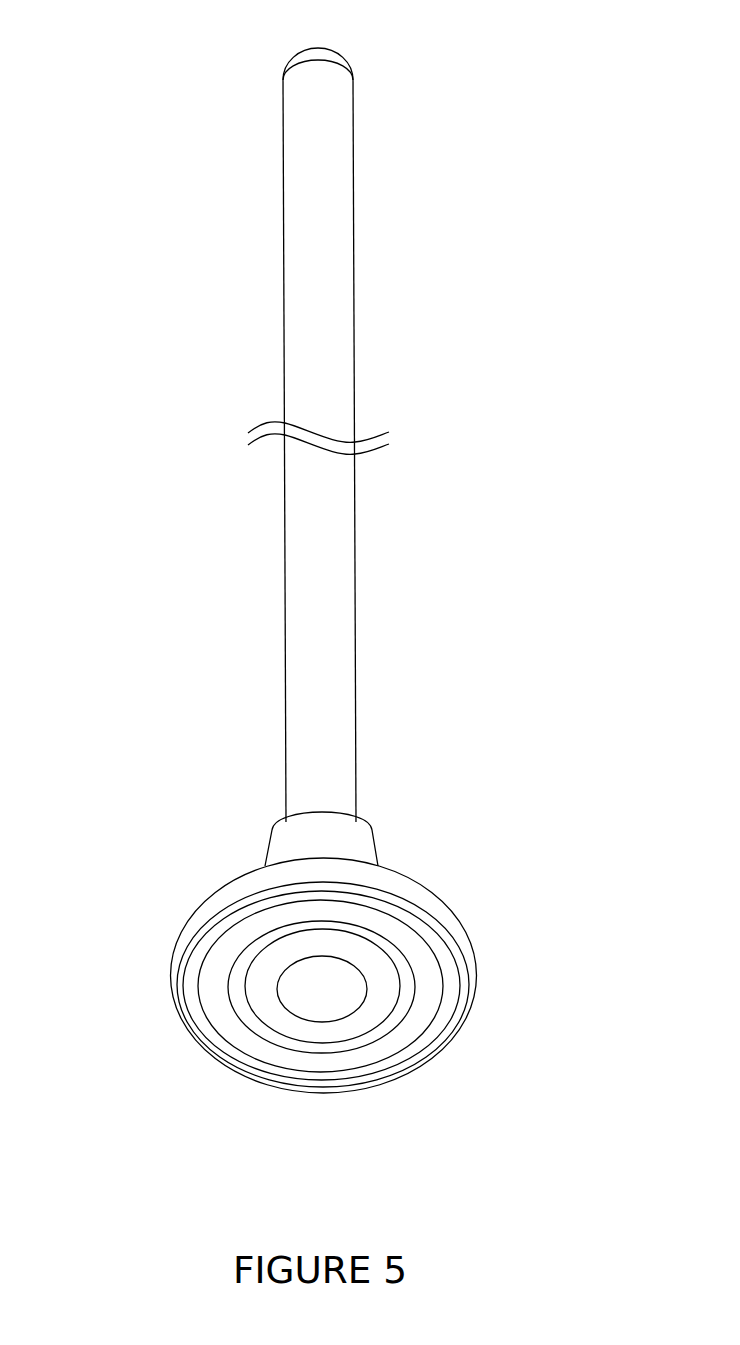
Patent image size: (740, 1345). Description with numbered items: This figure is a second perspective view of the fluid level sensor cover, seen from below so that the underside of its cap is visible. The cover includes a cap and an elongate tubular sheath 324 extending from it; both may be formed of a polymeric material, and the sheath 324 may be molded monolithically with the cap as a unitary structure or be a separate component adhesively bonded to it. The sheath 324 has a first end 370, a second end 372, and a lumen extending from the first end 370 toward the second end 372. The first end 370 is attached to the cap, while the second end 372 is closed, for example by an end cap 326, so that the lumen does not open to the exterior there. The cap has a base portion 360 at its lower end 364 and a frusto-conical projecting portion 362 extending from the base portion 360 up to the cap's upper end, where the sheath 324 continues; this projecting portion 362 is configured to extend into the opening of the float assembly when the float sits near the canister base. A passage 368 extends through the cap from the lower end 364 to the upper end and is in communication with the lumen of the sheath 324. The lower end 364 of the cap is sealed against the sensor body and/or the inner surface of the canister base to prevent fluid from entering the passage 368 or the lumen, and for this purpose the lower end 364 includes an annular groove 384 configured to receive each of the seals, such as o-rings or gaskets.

The second end 372 is at (262, 66).
The end cap 326 is at (332, 52).
The elongate tubular sheath 324 is at (342, 290).
The first end 370 is at (395, 790).
The frusto-conical projecting portion 362 is at (363, 851).
The base portion 360 is at (197, 915).
The lower end 364 is at (213, 995).
The annular groove 384 is at (453, 992).
The passage 368 is at (305, 1005).